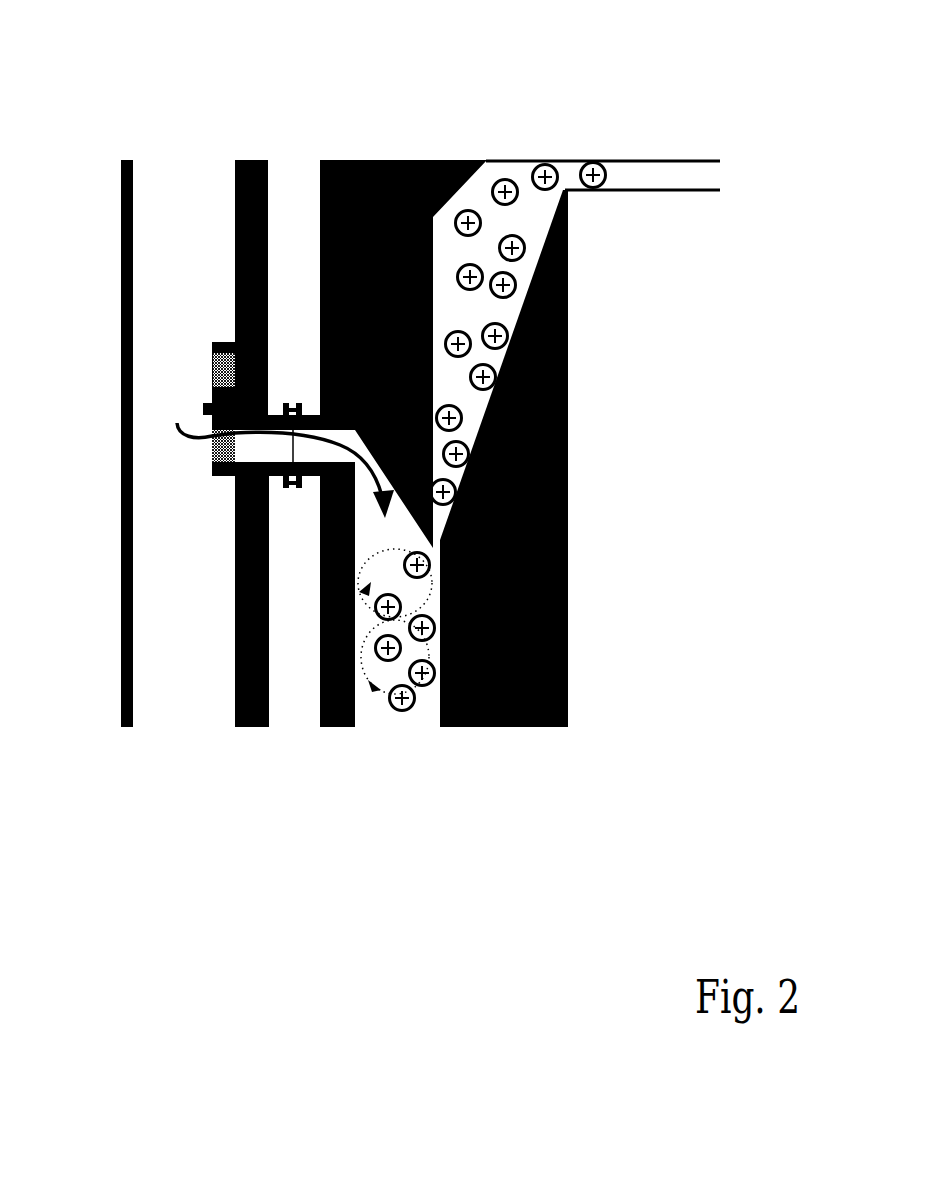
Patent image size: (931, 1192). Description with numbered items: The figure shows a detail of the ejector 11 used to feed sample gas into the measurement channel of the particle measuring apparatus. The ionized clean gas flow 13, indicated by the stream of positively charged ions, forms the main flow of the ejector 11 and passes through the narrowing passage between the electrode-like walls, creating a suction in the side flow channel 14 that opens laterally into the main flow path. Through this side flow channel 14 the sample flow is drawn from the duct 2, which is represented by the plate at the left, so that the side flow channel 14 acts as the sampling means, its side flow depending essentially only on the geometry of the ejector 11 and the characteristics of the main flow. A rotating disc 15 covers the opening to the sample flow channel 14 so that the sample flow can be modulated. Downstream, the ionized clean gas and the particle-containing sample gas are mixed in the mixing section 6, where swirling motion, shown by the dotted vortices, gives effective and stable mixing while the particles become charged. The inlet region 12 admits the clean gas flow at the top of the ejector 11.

The duct 2 is at (160, 230).
The mixing section 6 is at (378, 712).
The ejector 11 is at (585, 523).
The gas inlet channel 12 is at (642, 195).
The ionized clean gas flow 13 is at (453, 307).
The side flow channel 14 is at (263, 448).
The rotating disc 15 is at (202, 397).